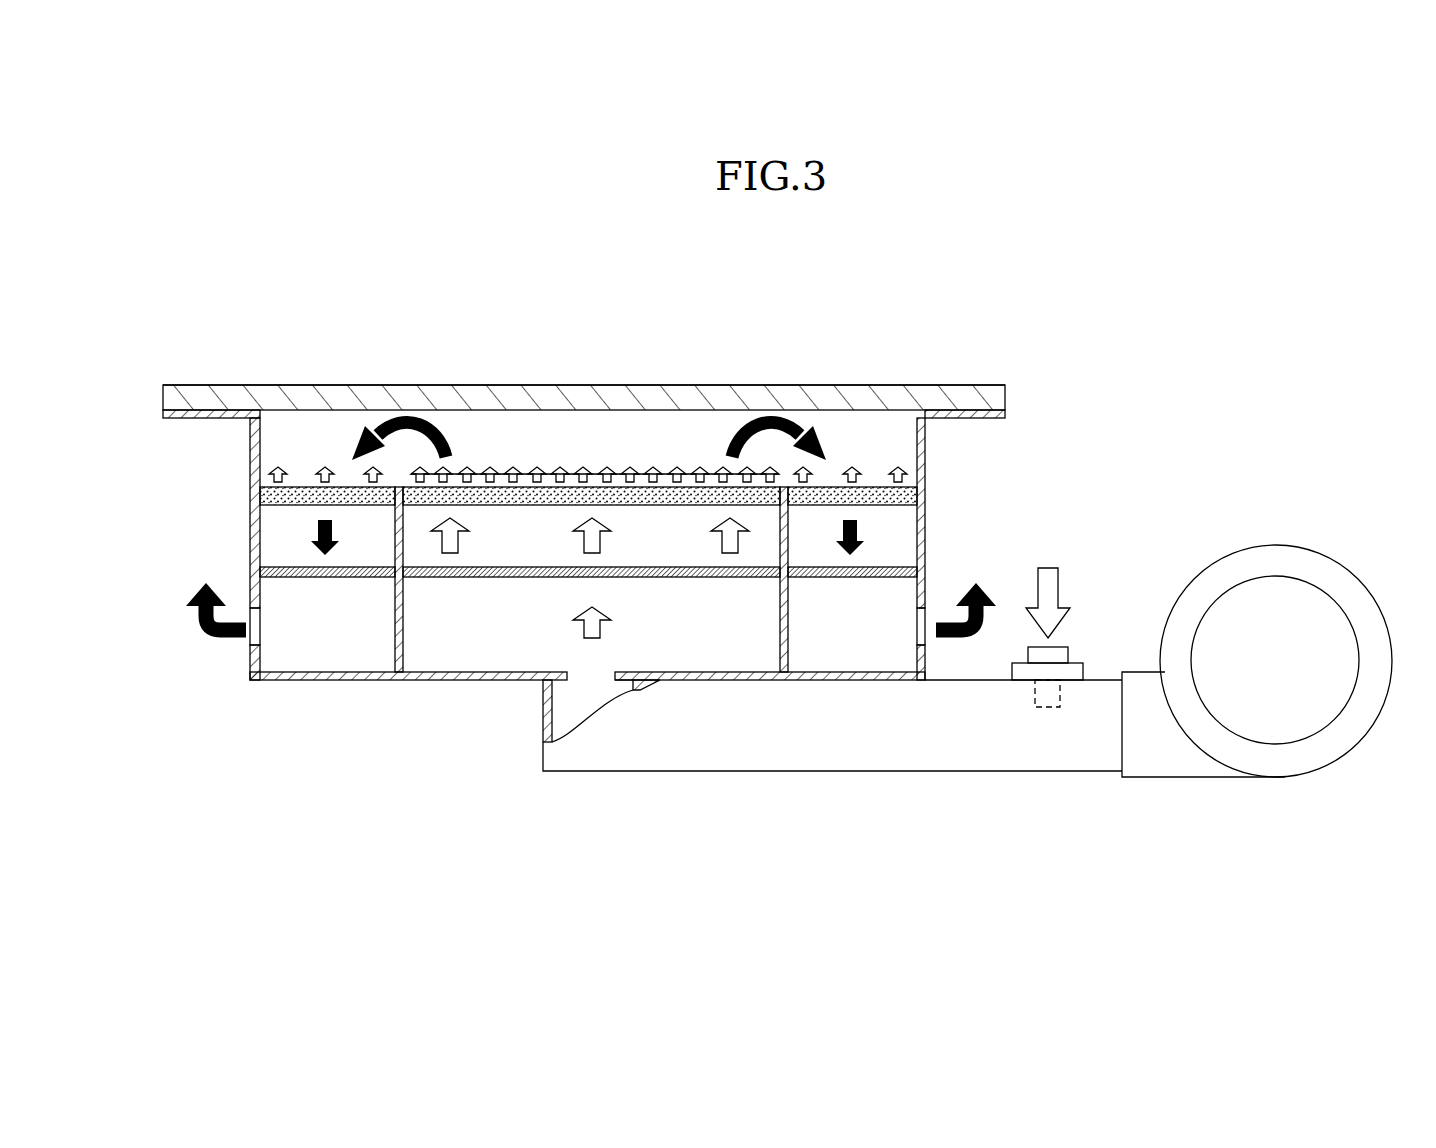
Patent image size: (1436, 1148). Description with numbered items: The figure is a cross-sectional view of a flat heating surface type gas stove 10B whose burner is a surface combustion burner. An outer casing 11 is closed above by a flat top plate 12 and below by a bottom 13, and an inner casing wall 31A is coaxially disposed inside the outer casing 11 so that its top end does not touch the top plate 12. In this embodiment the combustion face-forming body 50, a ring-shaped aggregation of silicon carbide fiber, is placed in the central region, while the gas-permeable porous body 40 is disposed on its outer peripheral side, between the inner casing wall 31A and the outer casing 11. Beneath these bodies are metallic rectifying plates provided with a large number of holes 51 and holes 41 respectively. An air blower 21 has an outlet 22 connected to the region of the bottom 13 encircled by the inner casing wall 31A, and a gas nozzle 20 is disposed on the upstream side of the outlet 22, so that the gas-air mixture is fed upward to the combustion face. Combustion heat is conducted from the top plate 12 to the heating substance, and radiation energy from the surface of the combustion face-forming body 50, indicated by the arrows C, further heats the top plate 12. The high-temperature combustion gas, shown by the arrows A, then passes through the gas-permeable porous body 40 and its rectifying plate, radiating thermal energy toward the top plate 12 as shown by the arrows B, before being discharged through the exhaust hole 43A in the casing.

The gas stove 10B is at (1220, 340).
The outer casing 11 is at (245, 478).
The top plate 12 is at (232, 385).
The bottom 13 is at (430, 683).
The gas nozzle 20 is at (1058, 655).
The air blower 21 is at (1287, 722).
The outlet 22 is at (578, 692).
The inner casing wall 31A is at (404, 628).
The gas-permeable porous body 40 is at (295, 502).
The holes 41 is at (330, 577).
The exhaust hole 43A is at (255, 637).
The combustion face-forming body 50 is at (635, 500).
The holes 51 is at (665, 578).
The arrows A is at (417, 410).
The arrows B is at (325, 460).
The arrows C is at (557, 465).